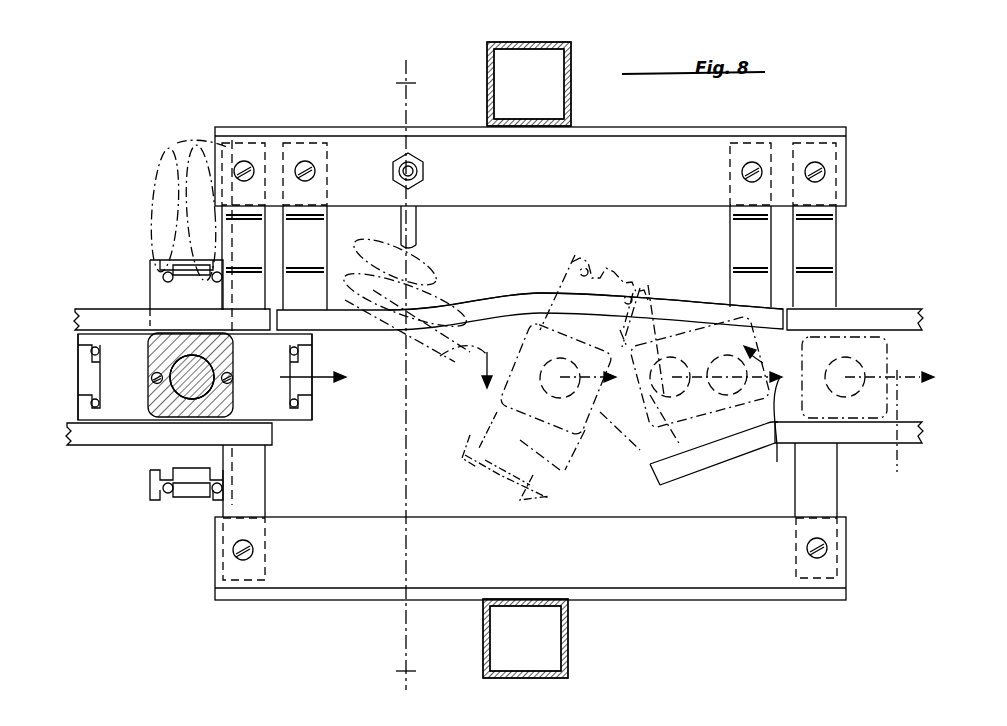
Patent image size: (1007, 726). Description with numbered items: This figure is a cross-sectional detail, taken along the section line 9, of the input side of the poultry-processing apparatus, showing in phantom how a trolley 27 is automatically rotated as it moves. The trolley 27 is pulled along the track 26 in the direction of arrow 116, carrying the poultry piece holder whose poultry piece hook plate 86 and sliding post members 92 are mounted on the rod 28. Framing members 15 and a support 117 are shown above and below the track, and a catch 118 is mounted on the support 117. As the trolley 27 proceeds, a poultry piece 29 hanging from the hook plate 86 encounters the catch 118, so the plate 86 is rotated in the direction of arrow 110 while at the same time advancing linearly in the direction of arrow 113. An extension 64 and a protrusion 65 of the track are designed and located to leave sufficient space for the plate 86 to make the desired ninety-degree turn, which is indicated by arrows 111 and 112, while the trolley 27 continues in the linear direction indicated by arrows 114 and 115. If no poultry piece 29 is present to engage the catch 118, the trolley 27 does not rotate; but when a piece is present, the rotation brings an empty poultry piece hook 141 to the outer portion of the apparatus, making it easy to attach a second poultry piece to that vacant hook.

The section line 9— 9 is at (400, 83).
The frame tube 15 is at (571, 56).
The track 26 is at (97, 312).
The trolley 27 is at (124, 303).
The rod 28 is at (212, 384).
The poultry piece 29 is at (188, 140).
The extension 64 is at (530, 300).
The protrusion 65 is at (687, 465).
The poultry piece hook plate 86 is at (133, 400).
The sliding post members 92 is at (152, 378).
The arrow indicating direction of plate rotation 110 is at (470, 375).
The arrow indicating trolley rotation 111 is at (654, 350).
The arrow indicating trolley rotation 112 is at (758, 368).
The arrow indicating linear direction 113 is at (597, 415).
The arrow indicating linear direction of trolley 114 is at (781, 433).
The arrow indicating linear direction of trolley 115 is at (902, 433).
The arrow indicating direction of trolley travel 116 is at (324, 382).
The support 117 is at (610, 163).
The catch 118 is at (412, 228).
The empty poultry piece hook 141 is at (618, 265).